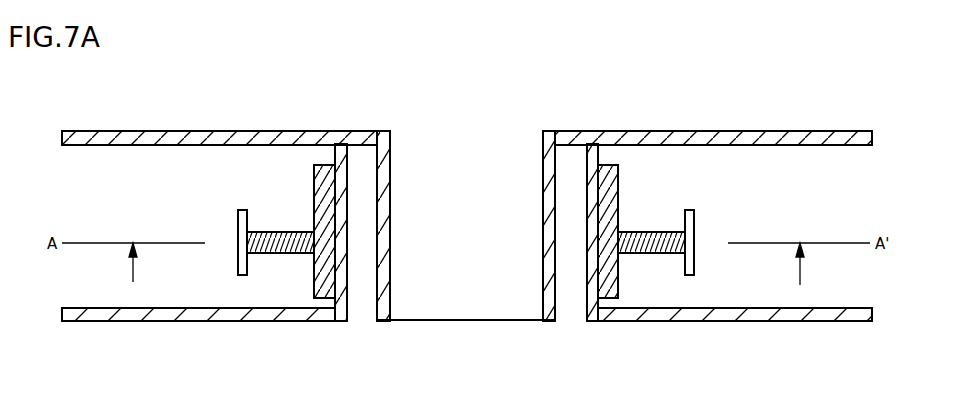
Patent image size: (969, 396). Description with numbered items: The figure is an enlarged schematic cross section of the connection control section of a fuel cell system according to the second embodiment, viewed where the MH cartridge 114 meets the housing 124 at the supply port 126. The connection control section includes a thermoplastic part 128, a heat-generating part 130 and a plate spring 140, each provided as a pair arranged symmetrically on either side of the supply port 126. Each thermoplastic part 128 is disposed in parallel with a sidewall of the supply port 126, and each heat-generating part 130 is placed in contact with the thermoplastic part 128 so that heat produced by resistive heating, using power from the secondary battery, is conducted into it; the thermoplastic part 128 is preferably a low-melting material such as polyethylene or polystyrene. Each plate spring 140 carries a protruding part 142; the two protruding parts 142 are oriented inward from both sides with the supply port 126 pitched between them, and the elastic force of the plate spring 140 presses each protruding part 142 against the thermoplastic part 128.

The MH cartridge 114 is at (262, 130).
The housing 124 is at (253, 322).
The supply port 126 is at (478, 210).
The thermoplastic part 128 is at (348, 180).
The heat-generating part 130 is at (314, 184).
The plate spring 140 is at (238, 256).
The protruding part 142 is at (282, 254).